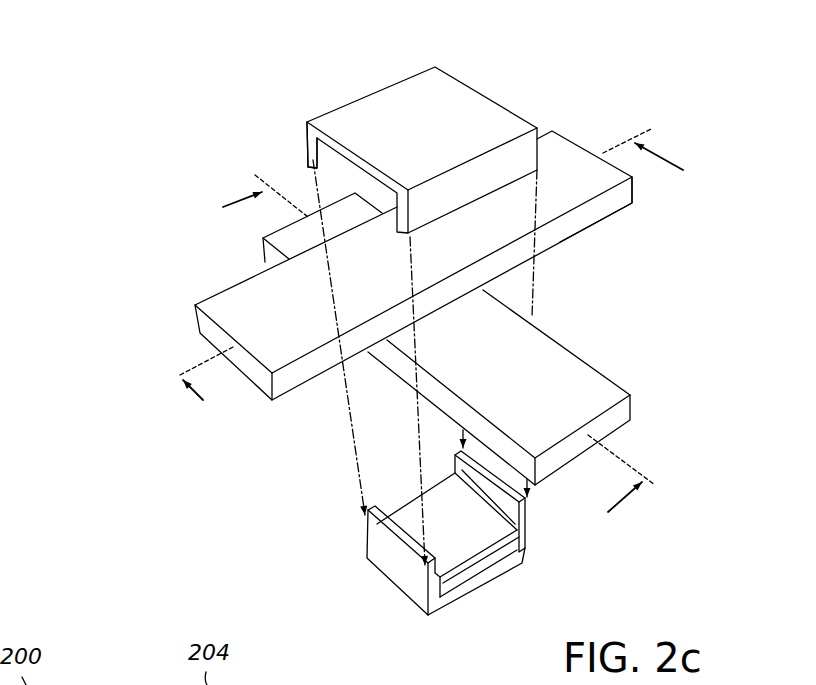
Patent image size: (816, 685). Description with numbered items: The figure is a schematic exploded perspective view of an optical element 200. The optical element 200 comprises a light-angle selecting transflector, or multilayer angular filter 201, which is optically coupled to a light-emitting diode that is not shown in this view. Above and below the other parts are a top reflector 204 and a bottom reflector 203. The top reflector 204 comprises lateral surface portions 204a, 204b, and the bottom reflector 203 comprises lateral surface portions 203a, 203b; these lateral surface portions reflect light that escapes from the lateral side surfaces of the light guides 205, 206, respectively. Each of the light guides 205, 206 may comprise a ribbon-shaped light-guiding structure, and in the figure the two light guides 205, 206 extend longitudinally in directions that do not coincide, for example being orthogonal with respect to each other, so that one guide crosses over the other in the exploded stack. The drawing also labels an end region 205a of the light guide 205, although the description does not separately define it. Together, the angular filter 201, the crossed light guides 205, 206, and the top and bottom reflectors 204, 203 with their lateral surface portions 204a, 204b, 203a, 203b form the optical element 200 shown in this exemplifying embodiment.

The optical element 200 is at (155, 105).
The multilayer angular filter 201 is at (440, 527).
The bottom reflector 203 is at (465, 560).
The lateral surface portion 203a is at (386, 527).
The lateral surface portion 203b is at (530, 530).
The top reflector 204 is at (415, 146).
The lateral surface portion 204a is at (312, 170).
The lateral surface portion 204b is at (480, 183).
The light guide 205 is at (449, 242).
The end portion of first bar 205a is at (605, 203).
The light guide 206 is at (287, 243).